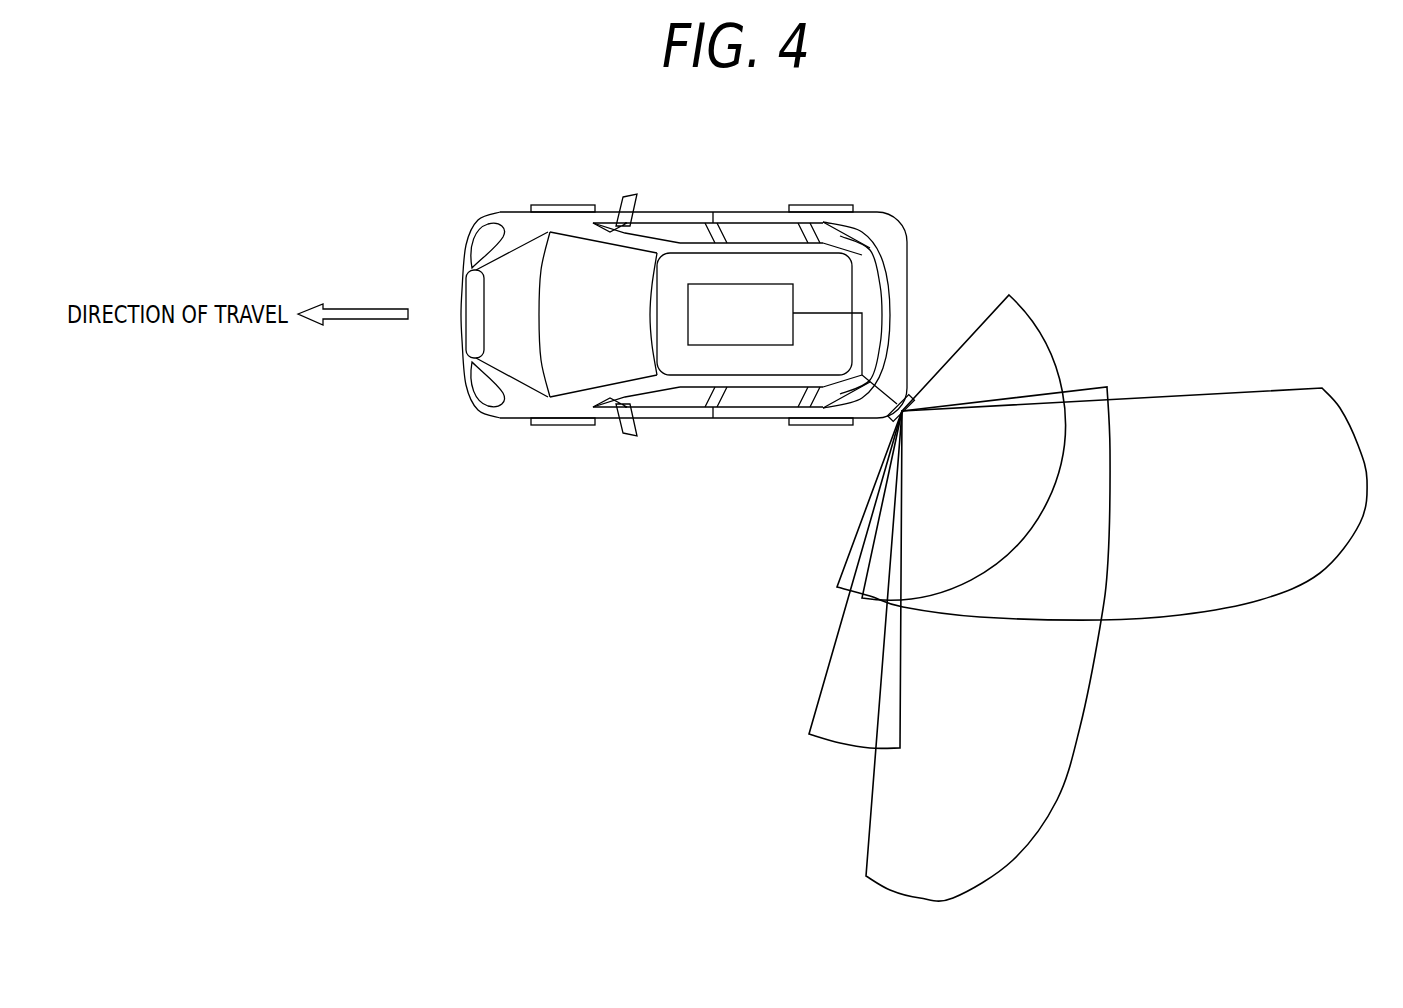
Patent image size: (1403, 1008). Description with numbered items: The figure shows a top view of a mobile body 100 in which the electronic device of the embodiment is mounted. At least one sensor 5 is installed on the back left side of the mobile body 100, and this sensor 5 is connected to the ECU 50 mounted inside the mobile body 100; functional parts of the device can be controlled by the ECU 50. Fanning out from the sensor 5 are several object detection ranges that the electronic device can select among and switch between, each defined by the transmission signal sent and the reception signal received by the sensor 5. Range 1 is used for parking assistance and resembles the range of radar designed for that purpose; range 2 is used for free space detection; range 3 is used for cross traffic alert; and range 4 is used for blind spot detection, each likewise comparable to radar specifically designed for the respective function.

The mobile body 100 is at (488, 210).
The ECU 50 is at (742, 283).
The sensor 5 is at (912, 396).
The object detection range 1 is at (1037, 320).
The object detection range 2 is at (822, 677).
The object detection range 3 is at (1076, 729).
The object detection range 4 is at (1268, 388).